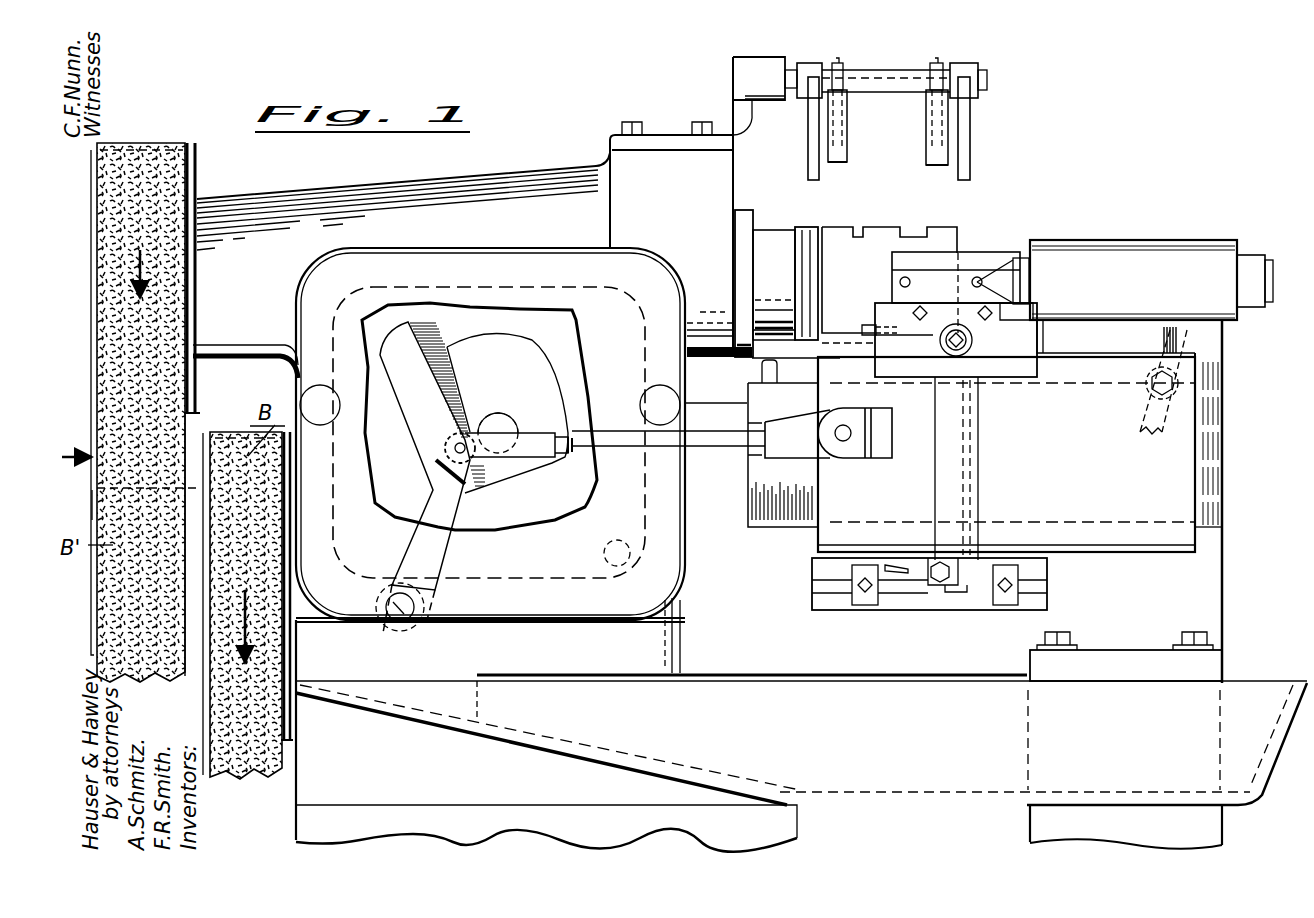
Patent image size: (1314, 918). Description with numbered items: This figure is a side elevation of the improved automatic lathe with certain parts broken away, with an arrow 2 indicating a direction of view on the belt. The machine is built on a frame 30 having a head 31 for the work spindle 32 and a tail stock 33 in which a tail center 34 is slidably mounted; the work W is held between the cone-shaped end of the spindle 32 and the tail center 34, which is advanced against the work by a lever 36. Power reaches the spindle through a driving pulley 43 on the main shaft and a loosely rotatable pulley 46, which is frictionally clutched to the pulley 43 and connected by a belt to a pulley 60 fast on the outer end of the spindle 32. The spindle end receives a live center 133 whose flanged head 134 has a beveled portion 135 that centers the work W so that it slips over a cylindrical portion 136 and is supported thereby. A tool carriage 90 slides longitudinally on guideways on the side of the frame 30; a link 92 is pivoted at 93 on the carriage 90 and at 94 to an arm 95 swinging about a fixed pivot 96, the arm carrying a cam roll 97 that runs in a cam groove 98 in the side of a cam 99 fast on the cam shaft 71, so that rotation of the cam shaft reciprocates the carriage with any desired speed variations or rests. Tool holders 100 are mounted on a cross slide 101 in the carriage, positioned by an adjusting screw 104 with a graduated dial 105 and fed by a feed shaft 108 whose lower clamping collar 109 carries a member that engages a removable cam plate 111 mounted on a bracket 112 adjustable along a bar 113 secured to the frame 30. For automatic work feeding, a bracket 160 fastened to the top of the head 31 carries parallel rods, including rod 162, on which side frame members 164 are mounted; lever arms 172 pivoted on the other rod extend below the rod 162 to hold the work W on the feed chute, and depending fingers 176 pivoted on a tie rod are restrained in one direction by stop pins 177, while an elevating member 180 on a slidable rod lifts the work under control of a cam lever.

The direction of view arrow 2 is at (77, 443).
The frame 30 is at (1208, 612).
The head 31 is at (507, 188).
The work spindle 32 is at (760, 230).
The tail stock 33 is at (1152, 243).
The tail center 34 is at (1000, 267).
The lever 36 is at (1167, 337).
The pulley 43 is at (248, 589).
The pulley 46 is at (92, 518).
The pulley 60 is at (197, 170).
The cam shaft 71 is at (551, 416).
The tool carriage 90 is at (1158, 535).
The link 92 is at (725, 443).
The pivot 93 is at (843, 441).
The pivot 94 is at (455, 448).
The arm 95 is at (427, 505).
The fixed pivot 96 is at (397, 628).
The cam roll 97 is at (467, 427).
The cam groove 98 is at (452, 380).
The cam 99 is at (537, 362).
The tool holder 100 is at (977, 258).
The cross slide 101 is at (1017, 318).
The adjusting screw 104 is at (966, 353).
The graduated dial 105 is at (973, 341).
The feed shaft 108 is at (960, 593).
The clamping collar 109 is at (938, 585).
The cam plate 111 is at (905, 575).
The bracket 112 is at (1010, 598).
The bar 113 is at (1042, 603).
The live center 133 is at (772, 248).
The flanged head 134 is at (800, 256).
The beveled portion 135 is at (818, 268).
The cylindrical portion 136 is at (807, 287).
The bracket 160 is at (680, 135).
The rod 162 is at (988, 80).
The side frame member 164 is at (969, 124).
The lever arm 172 is at (937, 62).
The depending finger 176 is at (940, 160).
The stop pin 177 is at (937, 118).
The elevating member 180 is at (850, 340).
The work W is at (933, 232).